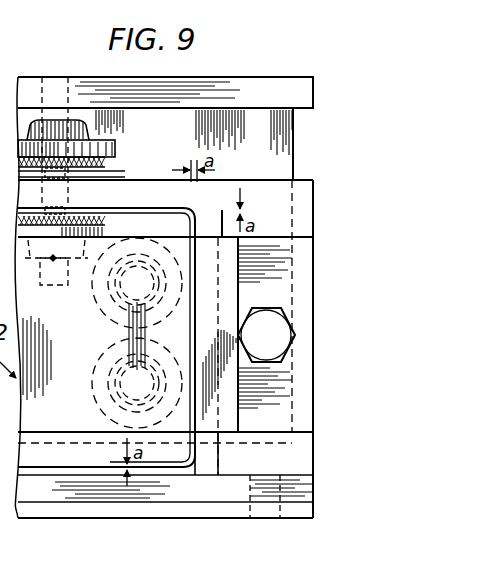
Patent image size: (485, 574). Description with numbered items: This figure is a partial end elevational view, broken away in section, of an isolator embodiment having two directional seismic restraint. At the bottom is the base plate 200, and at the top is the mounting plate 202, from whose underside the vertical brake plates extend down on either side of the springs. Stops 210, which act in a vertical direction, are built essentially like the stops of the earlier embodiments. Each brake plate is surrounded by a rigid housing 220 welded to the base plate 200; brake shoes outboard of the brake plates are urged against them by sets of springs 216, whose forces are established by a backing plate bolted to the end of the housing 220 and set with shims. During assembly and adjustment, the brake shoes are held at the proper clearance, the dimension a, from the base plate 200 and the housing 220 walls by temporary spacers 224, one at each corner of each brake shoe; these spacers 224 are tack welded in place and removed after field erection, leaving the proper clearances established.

The base plate 200 is at (208, 492).
The mounting plate 202 is at (250, 88).
The stops 210 is at (113, 143).
The springs 216 is at (108, 352).
The rigid housing 220 is at (318, 191).
The temporary spacers 224 is at (158, 437).